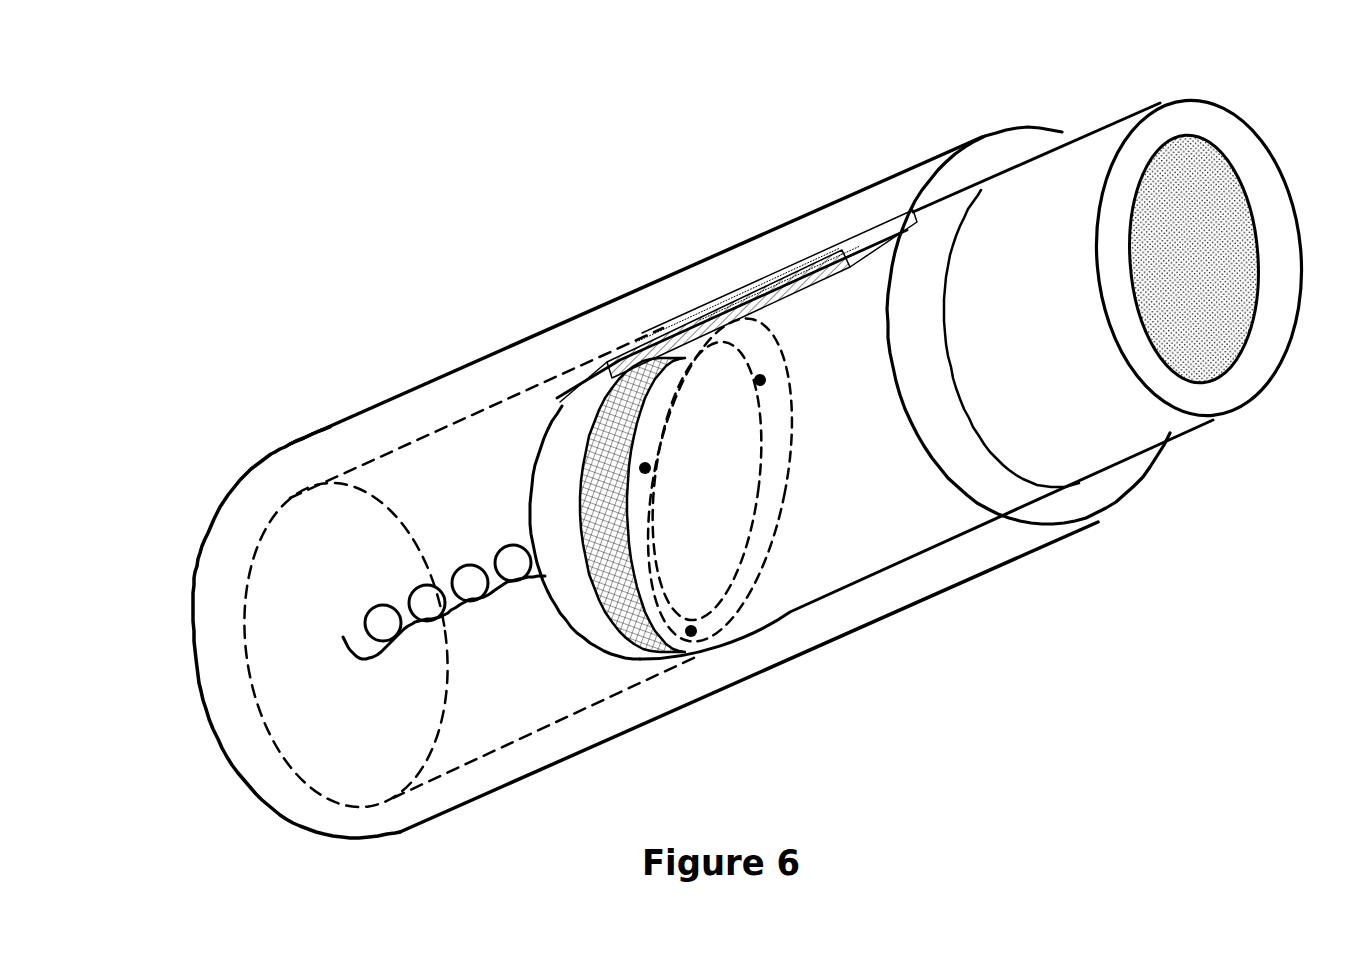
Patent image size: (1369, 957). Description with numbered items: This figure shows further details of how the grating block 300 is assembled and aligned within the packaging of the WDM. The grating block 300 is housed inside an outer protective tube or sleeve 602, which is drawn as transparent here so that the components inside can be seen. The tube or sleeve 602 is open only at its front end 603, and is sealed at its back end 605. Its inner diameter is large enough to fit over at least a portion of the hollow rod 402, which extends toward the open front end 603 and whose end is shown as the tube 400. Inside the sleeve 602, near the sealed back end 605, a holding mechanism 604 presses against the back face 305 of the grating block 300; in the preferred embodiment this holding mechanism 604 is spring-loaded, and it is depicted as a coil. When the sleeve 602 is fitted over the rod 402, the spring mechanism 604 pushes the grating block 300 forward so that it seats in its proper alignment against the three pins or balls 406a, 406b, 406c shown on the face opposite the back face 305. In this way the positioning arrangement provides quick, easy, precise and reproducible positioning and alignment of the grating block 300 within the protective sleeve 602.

The grating block 300 is at (662, 440).
The back face 305 is at (565, 618).
The tube 400 is at (993, 394).
The hollow rod 402 is at (870, 580).
The pin or ball 406a is at (697, 628).
The pin or ball 406b is at (766, 378).
The pin or ball 406c is at (651, 466).
The protective tube or sleeve 602 is at (922, 602).
The front end 603 is at (999, 115).
The holding mechanism 604 is at (510, 543).
The back end 605 is at (222, 761).